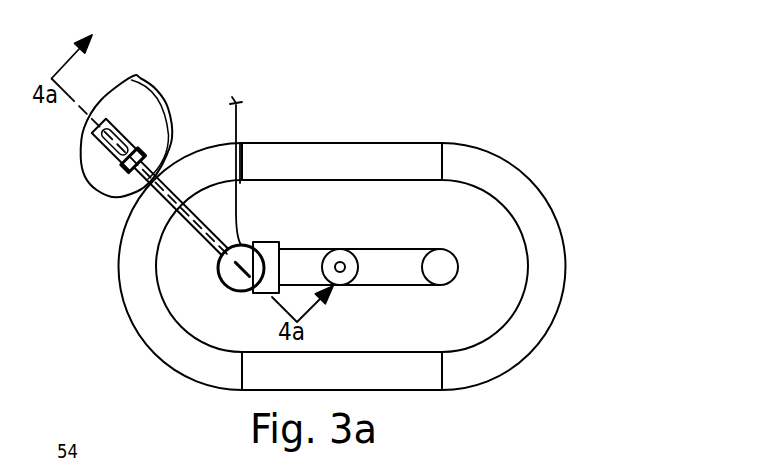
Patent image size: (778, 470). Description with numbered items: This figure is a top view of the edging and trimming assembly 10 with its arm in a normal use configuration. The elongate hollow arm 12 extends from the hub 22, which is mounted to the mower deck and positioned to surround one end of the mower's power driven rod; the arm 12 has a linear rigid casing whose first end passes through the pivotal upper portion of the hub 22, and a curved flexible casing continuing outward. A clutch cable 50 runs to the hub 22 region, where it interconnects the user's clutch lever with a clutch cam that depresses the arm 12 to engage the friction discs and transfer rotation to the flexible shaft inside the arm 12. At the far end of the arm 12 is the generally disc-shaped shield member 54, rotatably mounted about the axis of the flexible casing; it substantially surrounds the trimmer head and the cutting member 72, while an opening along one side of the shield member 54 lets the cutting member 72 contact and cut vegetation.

The edging and trimming assembly 10 is at (280, 73).
The elongate hollow arm 12 is at (148, 214).
The hub 22 is at (265, 247).
The clutch cable 50 is at (240, 123).
The shield member 54 is at (151, 85).
The cutting member 72 is at (82, 180).